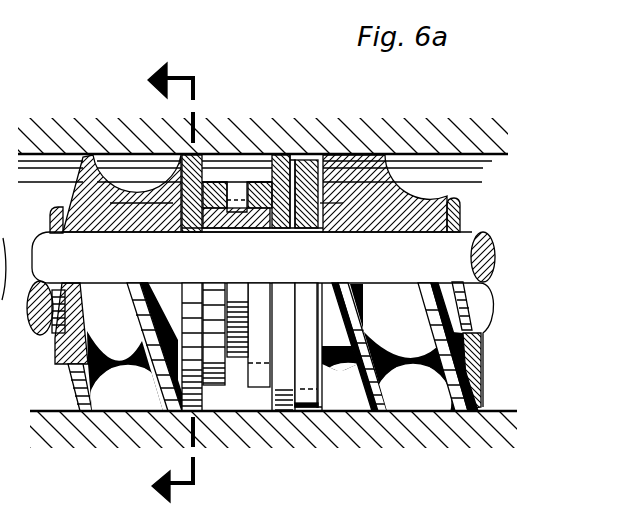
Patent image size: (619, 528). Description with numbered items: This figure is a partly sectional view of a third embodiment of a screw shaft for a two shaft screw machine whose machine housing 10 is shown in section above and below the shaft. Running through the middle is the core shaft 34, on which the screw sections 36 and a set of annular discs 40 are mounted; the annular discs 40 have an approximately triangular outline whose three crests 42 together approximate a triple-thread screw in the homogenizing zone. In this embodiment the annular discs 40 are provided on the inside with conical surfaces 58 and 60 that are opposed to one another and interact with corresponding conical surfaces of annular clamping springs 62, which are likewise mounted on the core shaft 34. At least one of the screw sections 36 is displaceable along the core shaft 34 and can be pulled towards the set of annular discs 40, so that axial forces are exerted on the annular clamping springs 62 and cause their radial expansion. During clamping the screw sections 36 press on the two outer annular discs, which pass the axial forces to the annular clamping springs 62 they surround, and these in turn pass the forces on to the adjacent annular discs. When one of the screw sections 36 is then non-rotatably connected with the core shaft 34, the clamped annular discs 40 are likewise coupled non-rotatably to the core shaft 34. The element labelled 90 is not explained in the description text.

The machine housing 10 is at (402, 128).
The core shaft 34 is at (50, 248).
The screw sections 36 is at (128, 348).
The annular discs 40 is at (260, 374).
The crests 42 is at (300, 395).
The conical surface 58 is at (285, 225).
The conical surface 60 is at (333, 207).
The annular clamping springs 62 is at (318, 210).
The bracket 90 is at (300, 397).